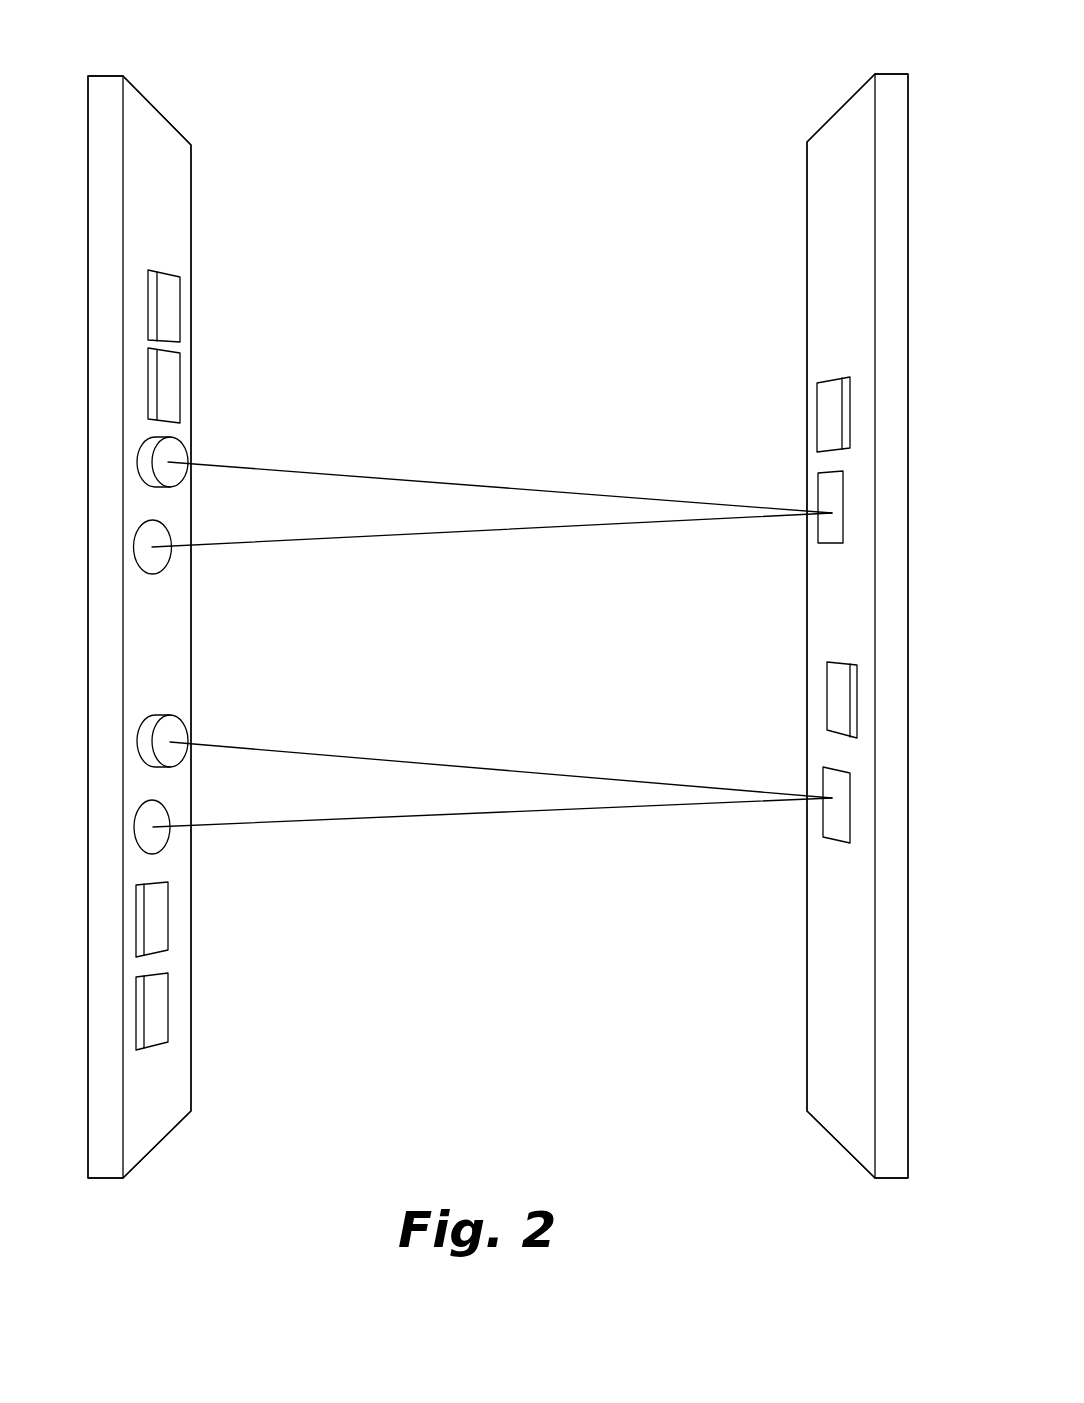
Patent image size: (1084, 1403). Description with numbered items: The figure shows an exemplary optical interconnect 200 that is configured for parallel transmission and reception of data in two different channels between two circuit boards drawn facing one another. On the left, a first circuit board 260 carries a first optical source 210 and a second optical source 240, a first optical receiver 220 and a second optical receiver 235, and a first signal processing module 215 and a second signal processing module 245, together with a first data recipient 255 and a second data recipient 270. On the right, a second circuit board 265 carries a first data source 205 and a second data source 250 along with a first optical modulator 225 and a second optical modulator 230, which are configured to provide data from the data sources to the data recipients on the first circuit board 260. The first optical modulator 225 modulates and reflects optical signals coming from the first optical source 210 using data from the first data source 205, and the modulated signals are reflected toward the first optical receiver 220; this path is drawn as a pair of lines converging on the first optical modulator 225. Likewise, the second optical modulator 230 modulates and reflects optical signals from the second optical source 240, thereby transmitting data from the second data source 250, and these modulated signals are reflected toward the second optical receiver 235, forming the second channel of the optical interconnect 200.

The optical interconnect 200 is at (266, 58).
The first data source 205 is at (823, 422).
The first optical source 210 is at (177, 470).
The first signal processing module 215 is at (167, 375).
The first optical receiver 220 is at (160, 560).
The first optical modulator 225 is at (828, 528).
The second optical modulator 230 is at (833, 781).
The second optical receiver 235 is at (163, 835).
The second optical source 240 is at (178, 730).
The second signal processing module 245 is at (168, 925).
The second data source 250 is at (838, 703).
The first data recipient 255 is at (167, 297).
The first circuit board 260 is at (166, 183).
The second circuit board 265 is at (842, 232).
The second data recipient 270 is at (162, 1003).